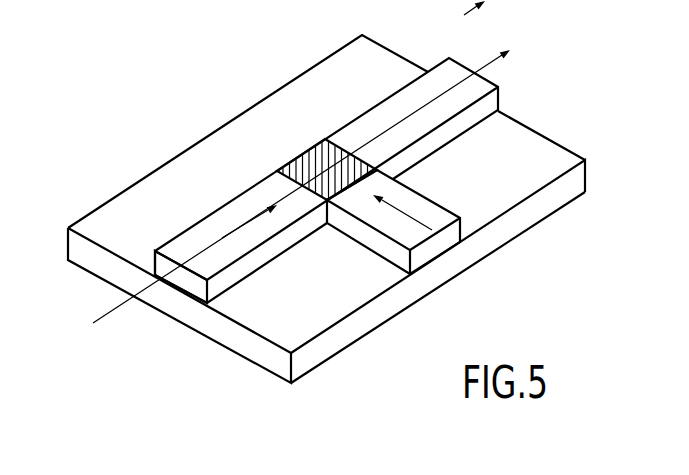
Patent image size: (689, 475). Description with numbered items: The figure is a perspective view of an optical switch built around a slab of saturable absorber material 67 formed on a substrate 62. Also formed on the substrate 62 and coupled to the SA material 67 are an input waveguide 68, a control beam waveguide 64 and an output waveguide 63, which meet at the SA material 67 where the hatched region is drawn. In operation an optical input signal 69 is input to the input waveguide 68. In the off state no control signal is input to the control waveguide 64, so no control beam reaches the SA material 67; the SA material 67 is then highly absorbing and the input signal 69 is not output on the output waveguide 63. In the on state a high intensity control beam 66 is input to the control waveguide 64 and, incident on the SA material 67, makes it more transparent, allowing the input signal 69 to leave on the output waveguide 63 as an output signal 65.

The substrate 62 is at (196, 157).
The output waveguide 63 is at (481, 112).
The control beam waveguide 64 is at (390, 259).
The output signal 65 is at (495, 67).
The control beam 66 is at (476, 265).
The saturable absorber material 67 is at (319, 152).
The input waveguide 68 is at (210, 290).
The optical input signal 69 is at (102, 314).